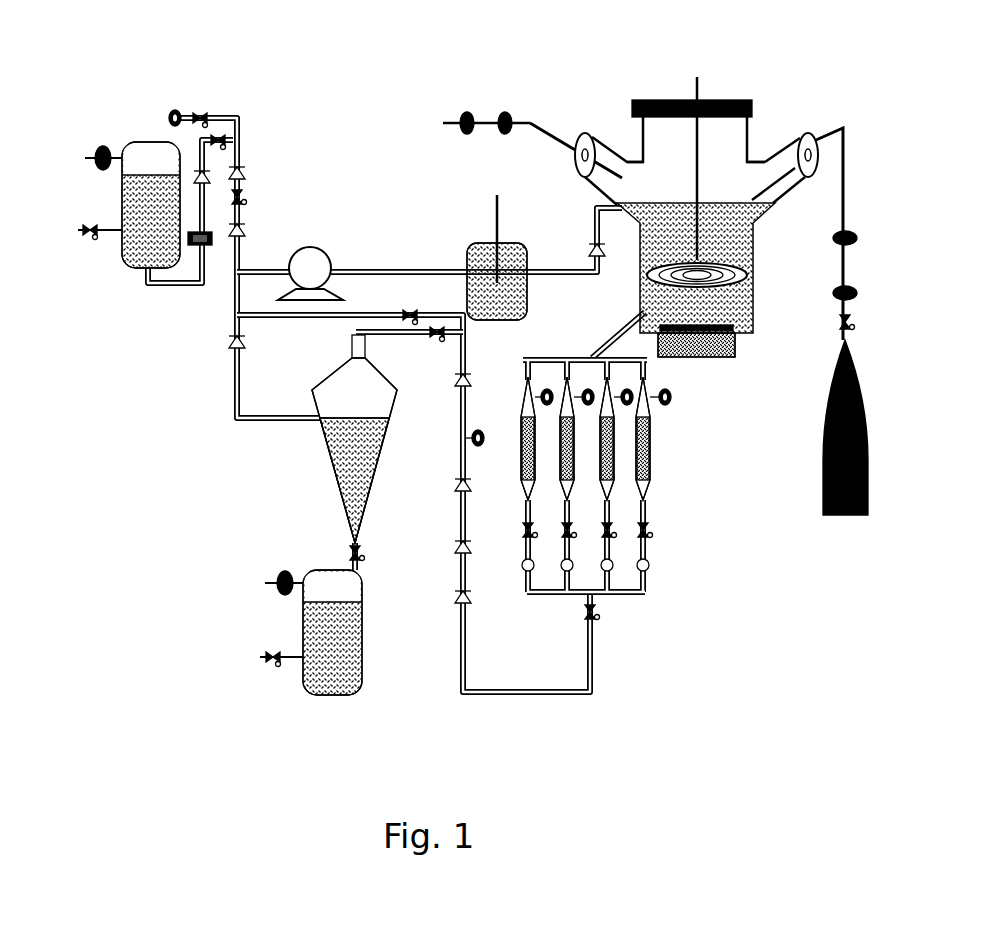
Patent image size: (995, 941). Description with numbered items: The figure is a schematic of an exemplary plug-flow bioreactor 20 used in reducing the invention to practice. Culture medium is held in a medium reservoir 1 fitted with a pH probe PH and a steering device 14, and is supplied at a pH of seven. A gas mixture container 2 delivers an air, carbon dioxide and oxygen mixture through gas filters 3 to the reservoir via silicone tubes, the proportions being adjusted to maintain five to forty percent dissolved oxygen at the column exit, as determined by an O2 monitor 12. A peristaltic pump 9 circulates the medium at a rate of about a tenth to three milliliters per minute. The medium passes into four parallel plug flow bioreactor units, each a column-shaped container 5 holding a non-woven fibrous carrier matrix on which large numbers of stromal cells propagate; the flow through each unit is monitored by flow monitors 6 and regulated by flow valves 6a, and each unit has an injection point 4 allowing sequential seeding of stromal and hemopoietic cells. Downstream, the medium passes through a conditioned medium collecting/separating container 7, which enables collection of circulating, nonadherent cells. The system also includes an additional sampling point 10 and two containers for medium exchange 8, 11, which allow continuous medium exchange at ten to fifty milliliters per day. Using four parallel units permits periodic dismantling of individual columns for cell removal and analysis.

The medium reservoir 1 is at (737, 142).
The gas mixture container 2 is at (840, 432).
The gas filters 3 is at (835, 290).
The injection points 4 is at (671, 401).
The plug or container of plug flow bioreactor 5 is at (650, 466).
The flow monitors 6 is at (657, 625).
The flow valves 6a is at (648, 527).
The conditioned medium collecting/separating container 7 is at (332, 483).
The container for medium exchange 8 is at (352, 646).
The peristaltic pump 9 is at (308, 262).
The sampling point 10 is at (170, 112).
The container for medium exchange 11 is at (143, 243).
The O2 monitor 12 is at (497, 195).
The steering device 14 is at (722, 358).
The plug-flow bioreactor 20 is at (407, 58).
The pH probe PH is at (697, 77).